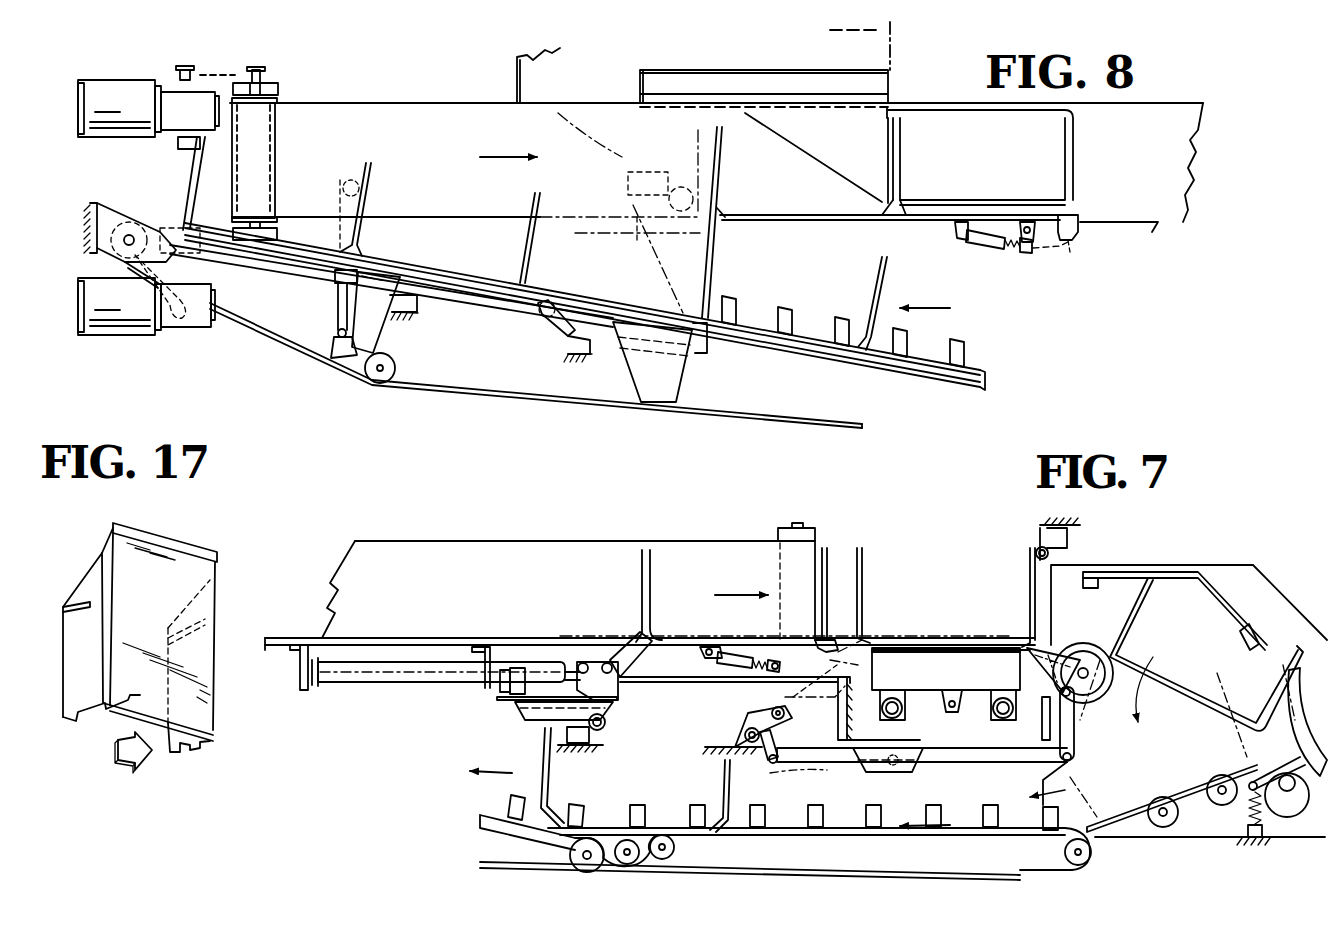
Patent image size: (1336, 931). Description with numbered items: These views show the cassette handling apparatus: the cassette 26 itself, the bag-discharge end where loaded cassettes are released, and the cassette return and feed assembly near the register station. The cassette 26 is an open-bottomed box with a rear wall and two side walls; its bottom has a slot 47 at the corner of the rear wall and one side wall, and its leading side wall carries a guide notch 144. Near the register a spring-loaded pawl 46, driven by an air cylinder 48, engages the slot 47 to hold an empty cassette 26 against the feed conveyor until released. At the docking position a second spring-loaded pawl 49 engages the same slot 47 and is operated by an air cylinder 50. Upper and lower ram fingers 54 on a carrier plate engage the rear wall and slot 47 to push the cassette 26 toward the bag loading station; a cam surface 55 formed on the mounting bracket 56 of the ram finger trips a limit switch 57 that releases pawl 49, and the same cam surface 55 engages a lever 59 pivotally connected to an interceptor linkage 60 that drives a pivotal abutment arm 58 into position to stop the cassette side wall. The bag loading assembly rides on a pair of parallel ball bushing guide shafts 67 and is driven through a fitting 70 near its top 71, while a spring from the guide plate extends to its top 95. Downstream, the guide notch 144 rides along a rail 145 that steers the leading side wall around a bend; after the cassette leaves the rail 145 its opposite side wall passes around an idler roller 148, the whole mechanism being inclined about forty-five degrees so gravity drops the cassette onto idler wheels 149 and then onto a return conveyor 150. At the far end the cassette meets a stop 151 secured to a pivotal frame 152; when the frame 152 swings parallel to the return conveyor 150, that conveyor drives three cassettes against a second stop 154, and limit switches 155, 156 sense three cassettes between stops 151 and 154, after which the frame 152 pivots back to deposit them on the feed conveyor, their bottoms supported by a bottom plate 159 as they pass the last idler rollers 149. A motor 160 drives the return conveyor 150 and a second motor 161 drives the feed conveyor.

In FIG. 7, the cassette 26 is at (867, 578).
In FIG. 8, the pawl 46 is at (1074, 234).
In FIG. 7, the slot 47 is at (843, 592).
In FIG. 8, the air cylinder 48 is at (985, 245).
In FIG. 7, the pawl 49 is at (835, 643).
In FIG. 7, the air cylinder 50 is at (722, 660).
In FIG. 7, the ram fingers 54 is at (630, 645).
In FIG. 7, the cam surface 55 is at (607, 707).
In FIG. 7, the mounting bracket 56 is at (517, 703).
In FIG. 7, the limit switch 57 is at (605, 724).
In FIG. 7, the pivotal abutment arm 58 is at (1050, 648).
In FIG. 7, the lever 59 is at (770, 708).
In FIG. 7, the interceptor linkage 60 is at (838, 750).
In FIG. 7, the ball bushing guide shafts 67 is at (890, 698).
In FIG. 7, the fitting 70 is at (954, 707).
In FIG. 7, the top 71 is at (967, 678).
In FIG. 7, the top 95 is at (928, 668).
In FIG. 17, the guide notch 144 is at (190, 745).
In FIG. 7, the rail 145 is at (1118, 573).
In FIG. 7, the idler roller 148 is at (1088, 643).
In FIG. 8, the idler wheels 149 is at (730, 298).
In FIG. 7, the idler wheels 149 is at (985, 812).
In FIG. 7, the return conveyor 150 is at (1003, 872).
In FIG. 8, the stop 151 is at (681, 384).
In FIG. 8, the pivotal frame 152 is at (488, 298).
In FIG. 8, the second stop 154 is at (167, 208).
In FIG. 8, the limit switch 155 is at (397, 313).
In FIG. 8, the limit switch 156 is at (547, 330).
In FIG. 8, the bottom plate 159 is at (617, 280).
In FIG. 8, the motor 160 is at (140, 333).
In FIG. 8, the second motor 161 is at (137, 93).